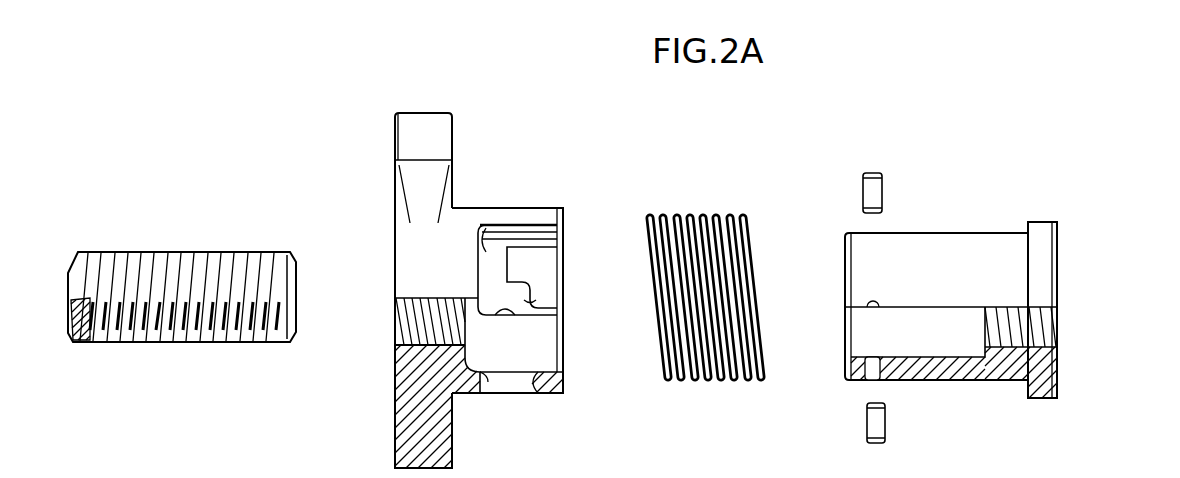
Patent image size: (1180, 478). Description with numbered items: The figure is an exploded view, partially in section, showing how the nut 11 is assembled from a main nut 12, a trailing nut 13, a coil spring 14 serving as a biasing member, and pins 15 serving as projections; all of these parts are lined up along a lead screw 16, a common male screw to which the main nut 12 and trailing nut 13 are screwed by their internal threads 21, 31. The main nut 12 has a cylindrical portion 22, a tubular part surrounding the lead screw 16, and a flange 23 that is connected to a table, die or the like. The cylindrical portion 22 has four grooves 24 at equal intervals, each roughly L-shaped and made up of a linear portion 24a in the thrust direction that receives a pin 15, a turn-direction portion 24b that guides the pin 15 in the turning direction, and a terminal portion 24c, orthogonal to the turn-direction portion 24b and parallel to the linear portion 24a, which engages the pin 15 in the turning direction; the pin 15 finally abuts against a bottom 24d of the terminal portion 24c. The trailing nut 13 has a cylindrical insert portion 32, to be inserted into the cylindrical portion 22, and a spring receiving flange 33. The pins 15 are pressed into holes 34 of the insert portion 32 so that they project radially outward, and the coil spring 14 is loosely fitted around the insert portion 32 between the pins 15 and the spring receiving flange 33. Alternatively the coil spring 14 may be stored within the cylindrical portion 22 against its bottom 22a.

The nut 11 is at (507, 130).
The main nut 12 is at (422, 106).
The trailing nut 13 is at (1006, 204).
The coil spring 14 is at (745, 213).
The pins 15 is at (880, 203).
The lead screw 16 is at (283, 246).
The internal thread 21 is at (410, 340).
The cylindrical portion 22 is at (528, 207).
The bottom of the cylindrical portion 22a is at (483, 396).
The flange 23 is at (453, 142).
The grooves 24 is at (487, 225).
The linear portion 24a is at (547, 233).
The turn-direction portion 24b is at (478, 270).
The terminal portion 24c is at (518, 317).
The bottom of the terminal portion 24d is at (530, 317).
The internal thread 31 is at (1055, 352).
The insert portion 32 is at (965, 240).
The spring receiving flange 33 is at (1036, 226).
The holes 34 is at (872, 306).